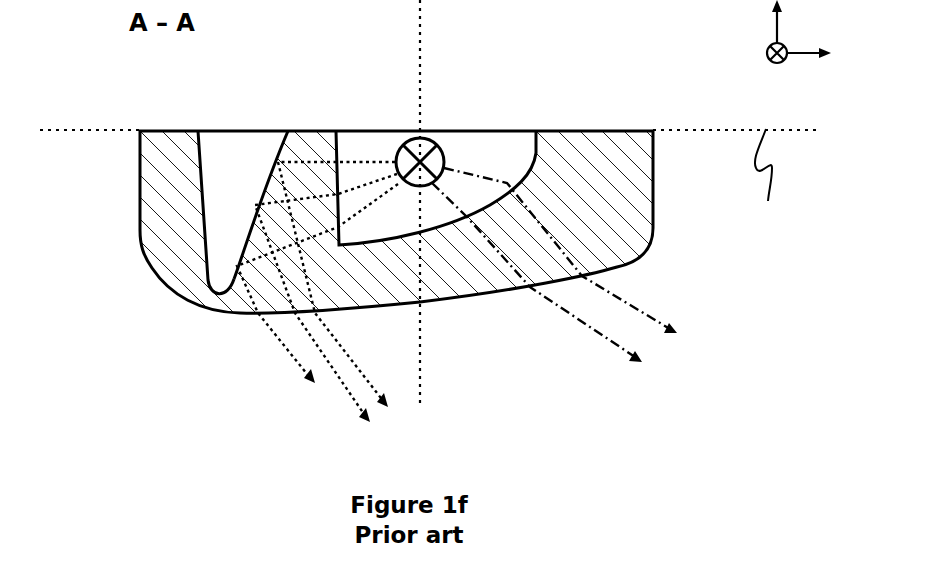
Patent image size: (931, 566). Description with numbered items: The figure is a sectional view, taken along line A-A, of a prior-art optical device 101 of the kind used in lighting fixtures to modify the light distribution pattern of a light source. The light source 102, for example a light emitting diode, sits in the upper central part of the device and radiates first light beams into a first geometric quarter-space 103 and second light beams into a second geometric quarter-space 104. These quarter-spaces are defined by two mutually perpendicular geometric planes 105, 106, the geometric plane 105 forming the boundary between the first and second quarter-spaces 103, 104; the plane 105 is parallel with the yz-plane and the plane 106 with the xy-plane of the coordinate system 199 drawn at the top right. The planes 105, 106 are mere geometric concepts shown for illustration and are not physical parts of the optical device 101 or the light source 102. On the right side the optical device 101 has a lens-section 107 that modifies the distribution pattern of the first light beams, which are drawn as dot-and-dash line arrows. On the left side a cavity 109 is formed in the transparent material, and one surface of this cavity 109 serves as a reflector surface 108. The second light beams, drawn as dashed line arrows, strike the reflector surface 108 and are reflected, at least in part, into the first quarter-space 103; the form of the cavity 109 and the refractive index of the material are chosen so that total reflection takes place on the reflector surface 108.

The optical device 101 is at (178, 299).
The light source 102 is at (446, 152).
The first geometric quarter-space 103 is at (667, 285).
The second geometric quarter-space 104 is at (189, 364).
The geometric plane 105 is at (420, 311).
The geometric plane 106 is at (770, 181).
The lens-section 107 is at (577, 220).
The reflector surface 108 is at (258, 196).
The cavity 109 is at (222, 172).
The coordinate system 199 is at (794, 34).